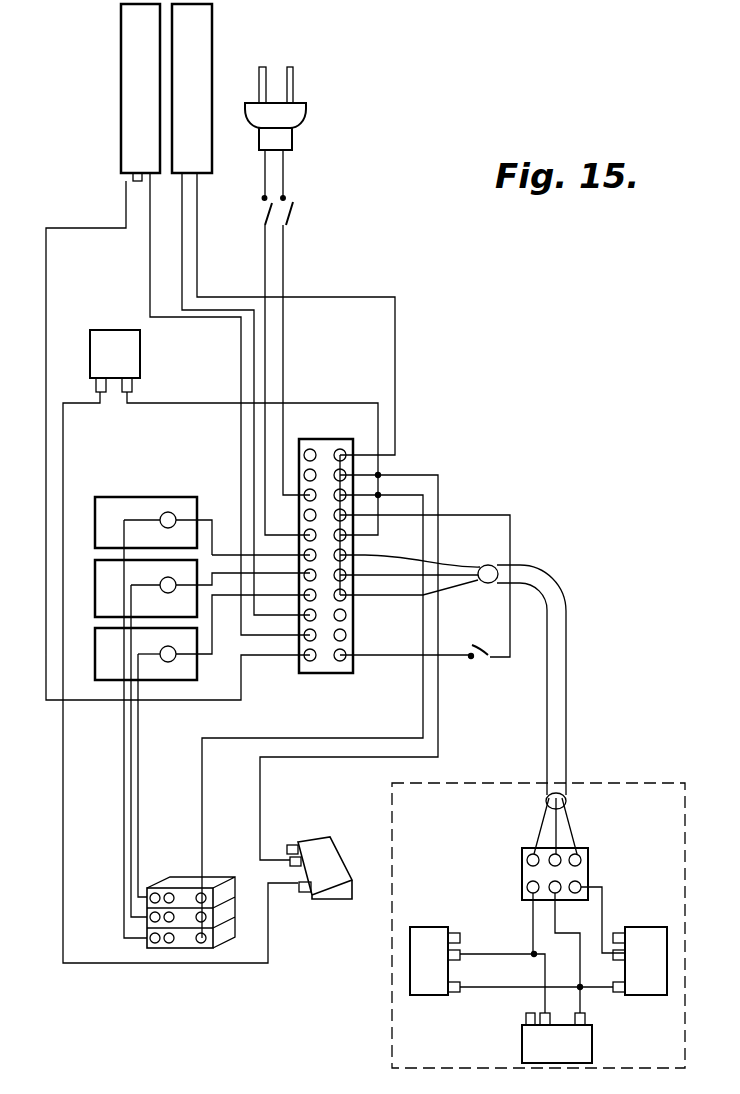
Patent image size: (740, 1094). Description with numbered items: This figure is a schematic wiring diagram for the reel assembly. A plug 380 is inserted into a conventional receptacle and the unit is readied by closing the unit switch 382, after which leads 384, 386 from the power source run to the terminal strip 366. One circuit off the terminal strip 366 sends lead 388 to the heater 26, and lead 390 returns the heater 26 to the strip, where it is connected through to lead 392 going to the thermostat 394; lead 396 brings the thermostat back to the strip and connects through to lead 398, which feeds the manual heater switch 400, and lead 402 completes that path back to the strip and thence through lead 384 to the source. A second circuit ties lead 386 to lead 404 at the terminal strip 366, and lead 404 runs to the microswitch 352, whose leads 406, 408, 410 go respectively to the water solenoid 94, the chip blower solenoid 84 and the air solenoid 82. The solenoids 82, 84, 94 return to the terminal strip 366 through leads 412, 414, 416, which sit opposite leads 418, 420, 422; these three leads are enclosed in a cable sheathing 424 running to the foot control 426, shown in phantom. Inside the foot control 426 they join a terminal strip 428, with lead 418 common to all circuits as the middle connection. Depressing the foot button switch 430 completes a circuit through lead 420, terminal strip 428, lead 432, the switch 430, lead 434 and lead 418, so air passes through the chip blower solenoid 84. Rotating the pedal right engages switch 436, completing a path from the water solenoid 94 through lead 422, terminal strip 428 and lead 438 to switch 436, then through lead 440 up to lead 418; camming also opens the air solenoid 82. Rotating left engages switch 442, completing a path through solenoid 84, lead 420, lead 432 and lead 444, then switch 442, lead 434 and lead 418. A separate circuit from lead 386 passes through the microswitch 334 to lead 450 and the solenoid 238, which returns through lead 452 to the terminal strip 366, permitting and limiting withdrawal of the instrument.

The heater 26 is at (212, 51).
The air solenoid 82 is at (153, 497).
The chip blower solenoid 84 is at (95, 577).
The water solenoid 94 is at (110, 685).
The solenoid 238 is at (140, 355).
The microswitch 334 is at (315, 842).
The microswitch 352 is at (173, 877).
The terminal strip 366 is at (327, 446).
The plug 380 is at (307, 113).
The unit switch 382 is at (287, 220).
The lead 384 is at (264, 264).
The lead 386 is at (283, 262).
The lead 388 is at (395, 358).
The lead 390 is at (182, 233).
The lead 392 is at (241, 459).
The thermostat 394 is at (121, 113).
The lead 396 is at (46, 318).
The lead 398 is at (363, 662).
The manual heater switch 400 is at (475, 665).
The lead 402 is at (463, 515).
The lead 404 is at (397, 493).
The lead 406 is at (138, 748).
The lead 408 is at (131, 768).
The lead 410 is at (124, 813).
The lead 412 is at (202, 518).
The lead 414 is at (222, 553).
The lead 416 is at (217, 628).
The lead 418 is at (451, 565).
The lead 420 is at (397, 580).
The lead 422 is at (442, 589).
The cable sheathing 424 is at (566, 625).
The foot control 426 is at (606, 782).
The terminal strip 428 is at (584, 870).
The foot button switch 430 is at (592, 1046).
The lead 432 is at (534, 940).
The lead 434 is at (553, 912).
The switch 436 is at (645, 932).
The lead 438 is at (605, 899).
The lead 440 is at (601, 989).
The switch 442 is at (430, 928).
The lead 444 is at (473, 962).
The lead 450 is at (270, 938).
The lead 452 is at (312, 403).